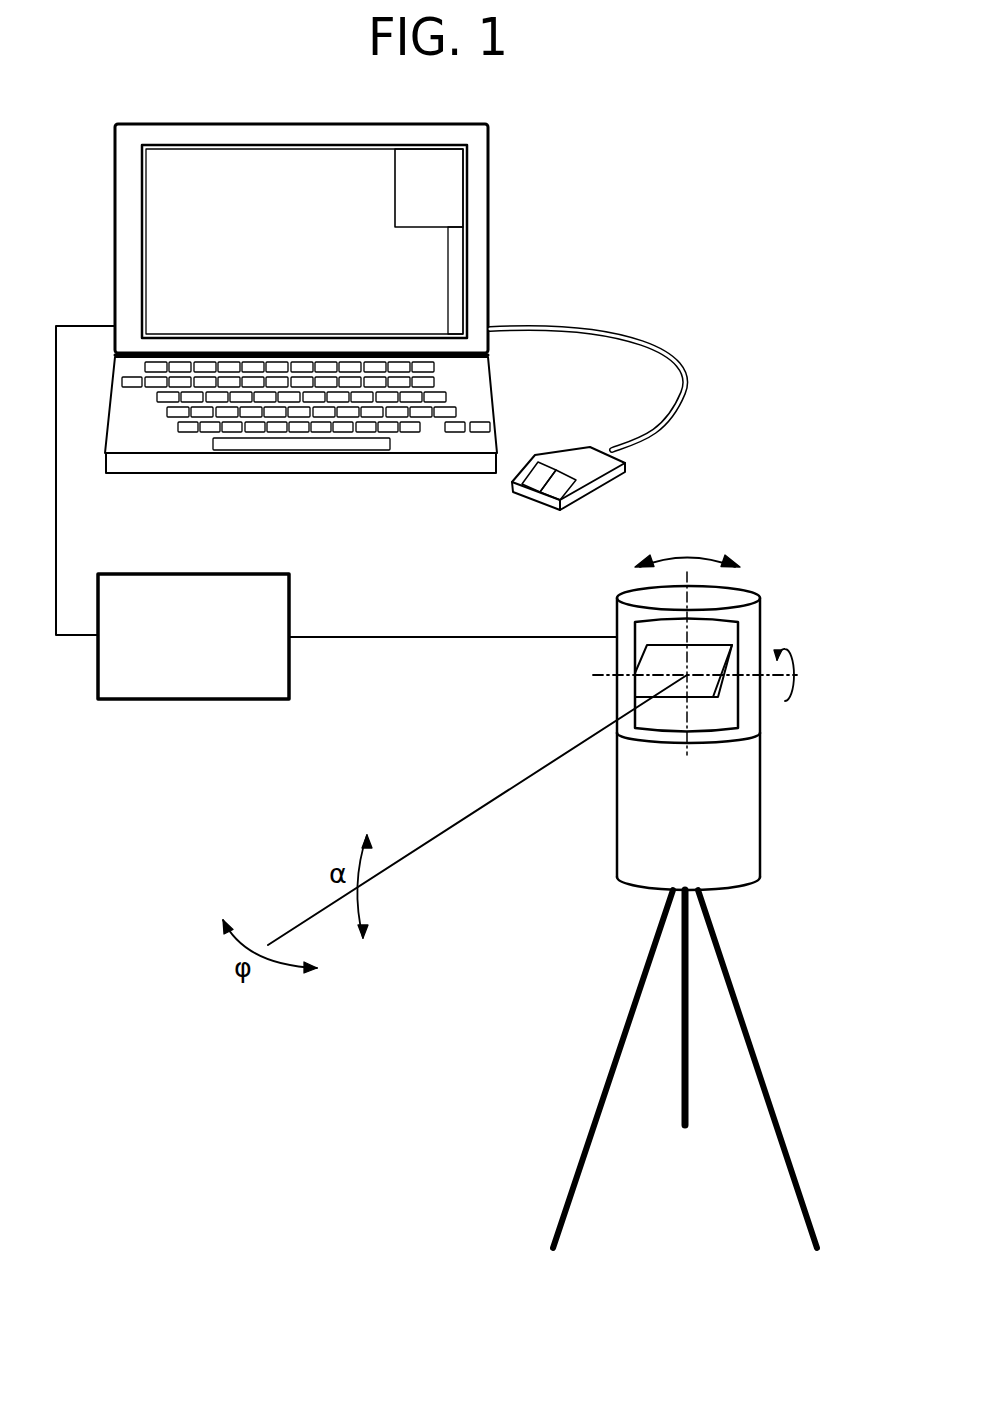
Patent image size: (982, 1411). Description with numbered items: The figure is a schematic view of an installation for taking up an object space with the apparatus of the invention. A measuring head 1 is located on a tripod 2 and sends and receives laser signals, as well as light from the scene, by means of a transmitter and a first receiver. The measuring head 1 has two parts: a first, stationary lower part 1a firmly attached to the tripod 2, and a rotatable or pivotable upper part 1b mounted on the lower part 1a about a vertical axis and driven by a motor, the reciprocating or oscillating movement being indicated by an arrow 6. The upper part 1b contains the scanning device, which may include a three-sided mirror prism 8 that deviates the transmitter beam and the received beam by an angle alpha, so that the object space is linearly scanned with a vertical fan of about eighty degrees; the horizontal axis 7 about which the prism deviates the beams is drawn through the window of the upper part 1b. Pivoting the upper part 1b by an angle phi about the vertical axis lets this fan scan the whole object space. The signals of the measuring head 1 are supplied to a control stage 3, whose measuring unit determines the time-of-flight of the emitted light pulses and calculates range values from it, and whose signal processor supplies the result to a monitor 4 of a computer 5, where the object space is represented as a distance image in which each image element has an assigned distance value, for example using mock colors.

The measuring head 1 is at (680, 731).
The lower part 1a is at (745, 828).
The upper part 1b is at (680, 663).
The tripod 2 is at (723, 955).
The control stage 3 is at (238, 699).
The monitor 4 is at (343, 298).
The computer 5 is at (452, 412).
The arrow 6 is at (710, 552).
The horizontal tilt axis 7 is at (656, 688).
The three-sided mirror prism 8 is at (708, 685).